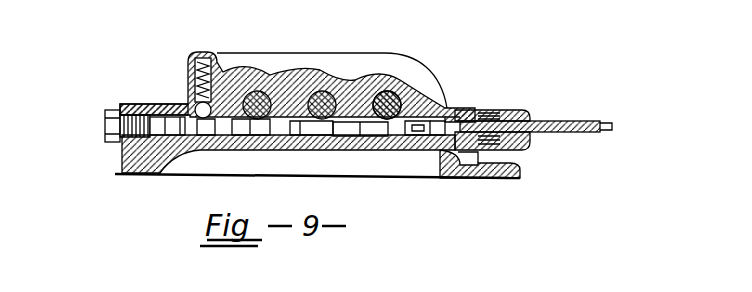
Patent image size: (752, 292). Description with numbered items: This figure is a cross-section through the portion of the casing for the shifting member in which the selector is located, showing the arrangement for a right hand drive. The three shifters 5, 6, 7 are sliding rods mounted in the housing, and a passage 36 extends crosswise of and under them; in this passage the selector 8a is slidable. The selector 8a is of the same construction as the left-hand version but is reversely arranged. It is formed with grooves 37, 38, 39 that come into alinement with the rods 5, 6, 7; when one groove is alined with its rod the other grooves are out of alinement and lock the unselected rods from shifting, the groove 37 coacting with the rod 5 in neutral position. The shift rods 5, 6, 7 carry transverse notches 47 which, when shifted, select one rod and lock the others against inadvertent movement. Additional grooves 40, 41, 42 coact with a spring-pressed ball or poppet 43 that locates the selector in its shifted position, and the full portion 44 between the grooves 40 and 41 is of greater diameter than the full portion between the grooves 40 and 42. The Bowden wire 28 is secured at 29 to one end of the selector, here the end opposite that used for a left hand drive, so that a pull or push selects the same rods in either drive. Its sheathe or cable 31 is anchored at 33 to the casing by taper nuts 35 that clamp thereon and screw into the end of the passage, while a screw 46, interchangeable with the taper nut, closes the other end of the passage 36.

The shifter 5 is at (318, 93).
The shifter 6 is at (247, 72).
The shifter 7 is at (392, 100).
The selector 8a is at (366, 136).
The Bowden wire 28 is at (612, 130).
The Bowden wire connection to selector 29 is at (452, 165).
The sheathe or cable of the Bowden wire 31 is at (575, 121).
The anchorage of sheathing to casing 33 is at (518, 165).
The taper nuts 35 is at (510, 108).
The passage 36 is at (130, 160).
The groove 37 is at (340, 137).
The groove 38 is at (280, 150).
The groove 39 is at (408, 137).
The groove 40 is at (208, 150).
The groove 41 is at (166, 108).
The groove 42 is at (232, 137).
The spring-pressed ball or poppet 43 is at (197, 95).
The full portion of the rod 44 is at (176, 158).
The screw 46 is at (104, 125).
The transverse notches 47 is at (288, 115).